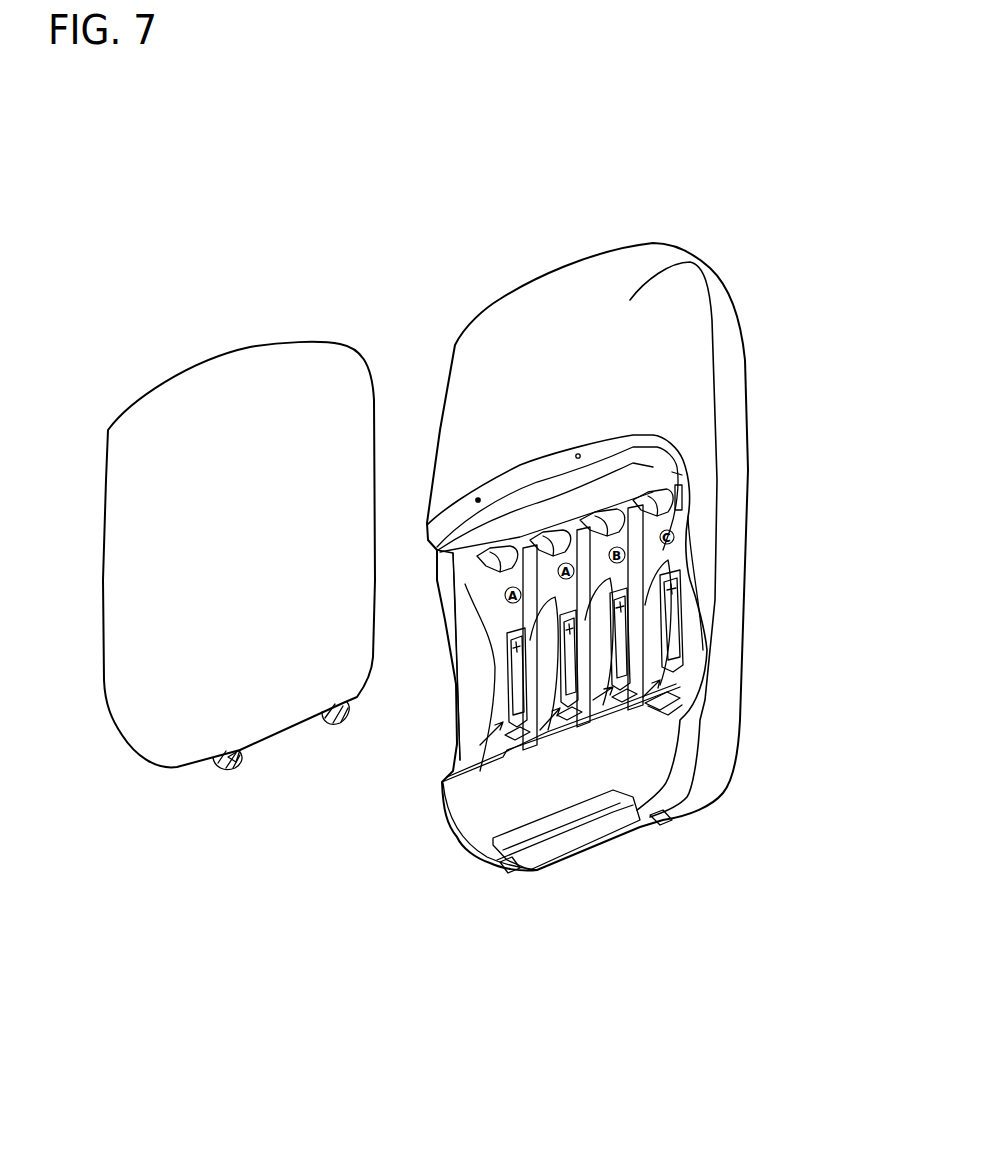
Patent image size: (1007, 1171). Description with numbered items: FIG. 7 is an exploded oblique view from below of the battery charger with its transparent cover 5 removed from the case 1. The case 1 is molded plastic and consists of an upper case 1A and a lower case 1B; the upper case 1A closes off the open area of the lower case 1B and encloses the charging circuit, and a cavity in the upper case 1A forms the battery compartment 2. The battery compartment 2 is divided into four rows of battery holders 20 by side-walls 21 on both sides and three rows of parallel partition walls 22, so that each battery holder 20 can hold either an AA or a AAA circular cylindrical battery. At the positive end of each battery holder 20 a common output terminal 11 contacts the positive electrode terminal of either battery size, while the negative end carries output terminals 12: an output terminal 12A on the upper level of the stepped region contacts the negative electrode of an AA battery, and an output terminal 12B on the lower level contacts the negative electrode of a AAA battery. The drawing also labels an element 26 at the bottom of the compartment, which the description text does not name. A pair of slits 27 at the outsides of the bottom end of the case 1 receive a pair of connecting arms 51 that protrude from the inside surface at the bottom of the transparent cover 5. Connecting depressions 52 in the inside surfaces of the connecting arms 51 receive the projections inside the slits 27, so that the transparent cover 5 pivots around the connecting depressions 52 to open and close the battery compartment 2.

The case 1 is at (631, 528).
The upper case 1A is at (703, 263).
The lower case 1B is at (714, 536).
The battery compartment 2 is at (445, 703).
The transparent cover 5 is at (263, 428).
The common output terminal 11 is at (510, 548).
The output terminal 12 is at (681, 655).
The output terminal 12A is at (673, 711).
The output terminal 12B is at (673, 662).
The battery holder 20 is at (463, 750).
The side-wall 21 is at (463, 578).
The partition wall 22 is at (527, 610).
The bottom wall 26 is at (480, 750).
The slit 27 is at (519, 875).
The connecting arm 51 is at (230, 758).
The connecting depression 52 is at (237, 755).